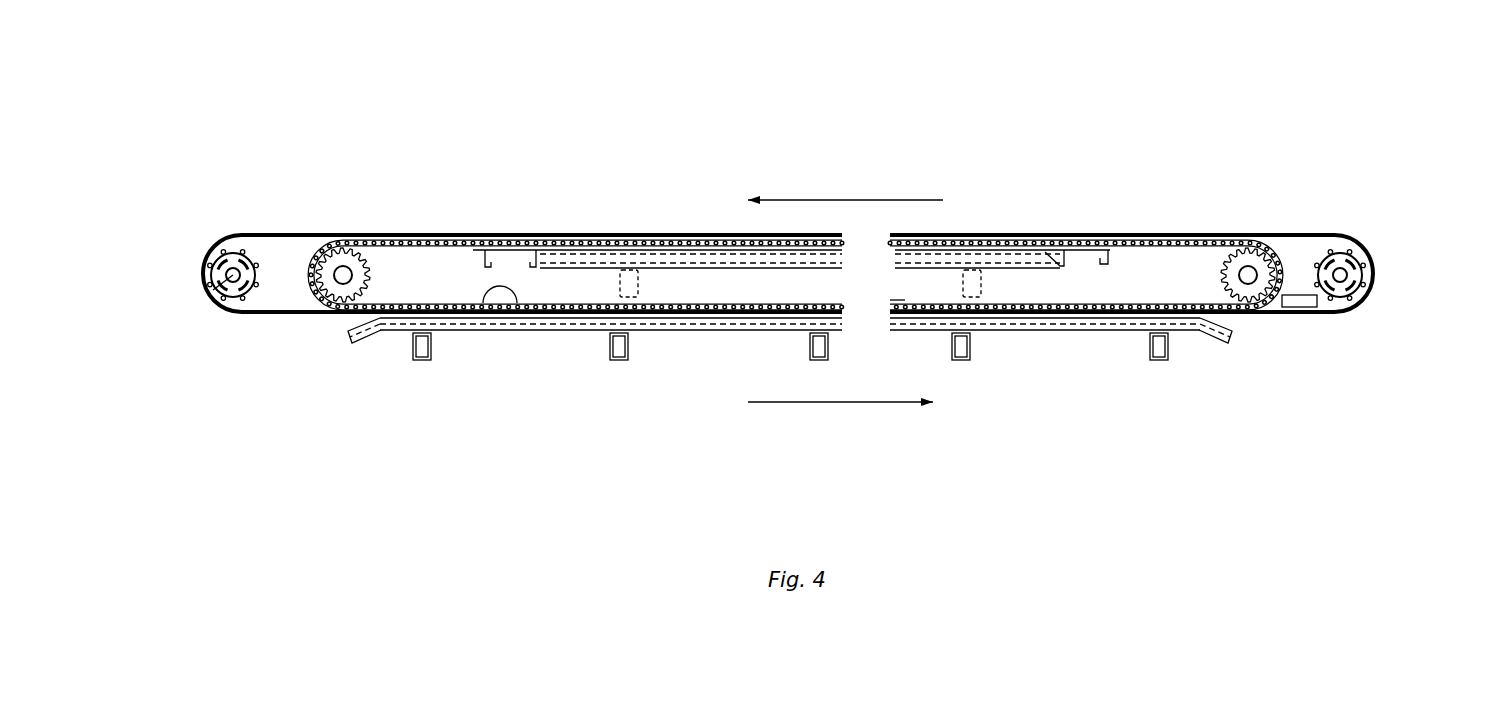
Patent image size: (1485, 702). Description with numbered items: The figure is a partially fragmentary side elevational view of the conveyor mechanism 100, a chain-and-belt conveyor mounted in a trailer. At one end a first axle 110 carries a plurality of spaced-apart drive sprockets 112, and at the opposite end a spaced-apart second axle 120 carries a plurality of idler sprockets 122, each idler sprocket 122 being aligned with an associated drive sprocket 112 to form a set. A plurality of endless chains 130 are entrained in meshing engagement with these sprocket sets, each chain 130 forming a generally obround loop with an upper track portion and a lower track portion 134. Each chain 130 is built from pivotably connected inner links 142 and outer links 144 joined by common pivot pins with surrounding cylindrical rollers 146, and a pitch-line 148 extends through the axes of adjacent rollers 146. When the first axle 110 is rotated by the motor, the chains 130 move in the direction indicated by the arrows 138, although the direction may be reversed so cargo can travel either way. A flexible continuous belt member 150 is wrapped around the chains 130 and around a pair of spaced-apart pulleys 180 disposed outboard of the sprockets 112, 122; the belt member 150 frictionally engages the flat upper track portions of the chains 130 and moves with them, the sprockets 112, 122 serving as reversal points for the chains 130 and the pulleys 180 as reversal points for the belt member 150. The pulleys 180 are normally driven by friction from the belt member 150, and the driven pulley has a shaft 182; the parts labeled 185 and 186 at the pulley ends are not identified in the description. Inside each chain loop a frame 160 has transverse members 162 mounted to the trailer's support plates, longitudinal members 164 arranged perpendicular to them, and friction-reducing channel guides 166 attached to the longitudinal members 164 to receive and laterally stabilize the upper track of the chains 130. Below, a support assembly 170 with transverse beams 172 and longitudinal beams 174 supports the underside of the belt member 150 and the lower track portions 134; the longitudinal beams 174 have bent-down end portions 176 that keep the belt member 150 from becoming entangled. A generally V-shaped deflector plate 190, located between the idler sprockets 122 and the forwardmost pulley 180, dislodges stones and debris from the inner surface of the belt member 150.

The conveyor mechanism 100 is at (1120, 127).
The first axle 110 is at (332, 283).
The drive sprockets 112 is at (346, 252).
The second axle 120 is at (1250, 284).
The idler sprockets 122 is at (1240, 258).
The endless chains 130 is at (302, 260).
The lower track portion 134 is at (517, 303).
The direction of chain movement 138 is at (842, 200).
The inner links 142 is at (932, 300).
The outer links 144 is at (890, 303).
The cylindrical roller 146 is at (722, 245).
The pitch-line 148 is at (720, 236).
The belt member 150 is at (268, 234).
The frame 160 is at (1074, 270).
The transverse members 162 is at (618, 276).
The longitudinal members 164 is at (560, 268).
The channel guides 166 is at (484, 264).
The support assembly 170 is at (688, 345).
The transverse beams 172 is at (630, 349).
The longitudinal beams 174 is at (703, 332).
The bent-down end portions 176 is at (364, 344).
The pulleys 180 is at (276, 297).
The shaft of the driven pulley 182 is at (218, 300).
The motor shaft 185 is at (205, 272).
The motor 186 is at (247, 245).
The deflector plate 190 is at (1300, 308).